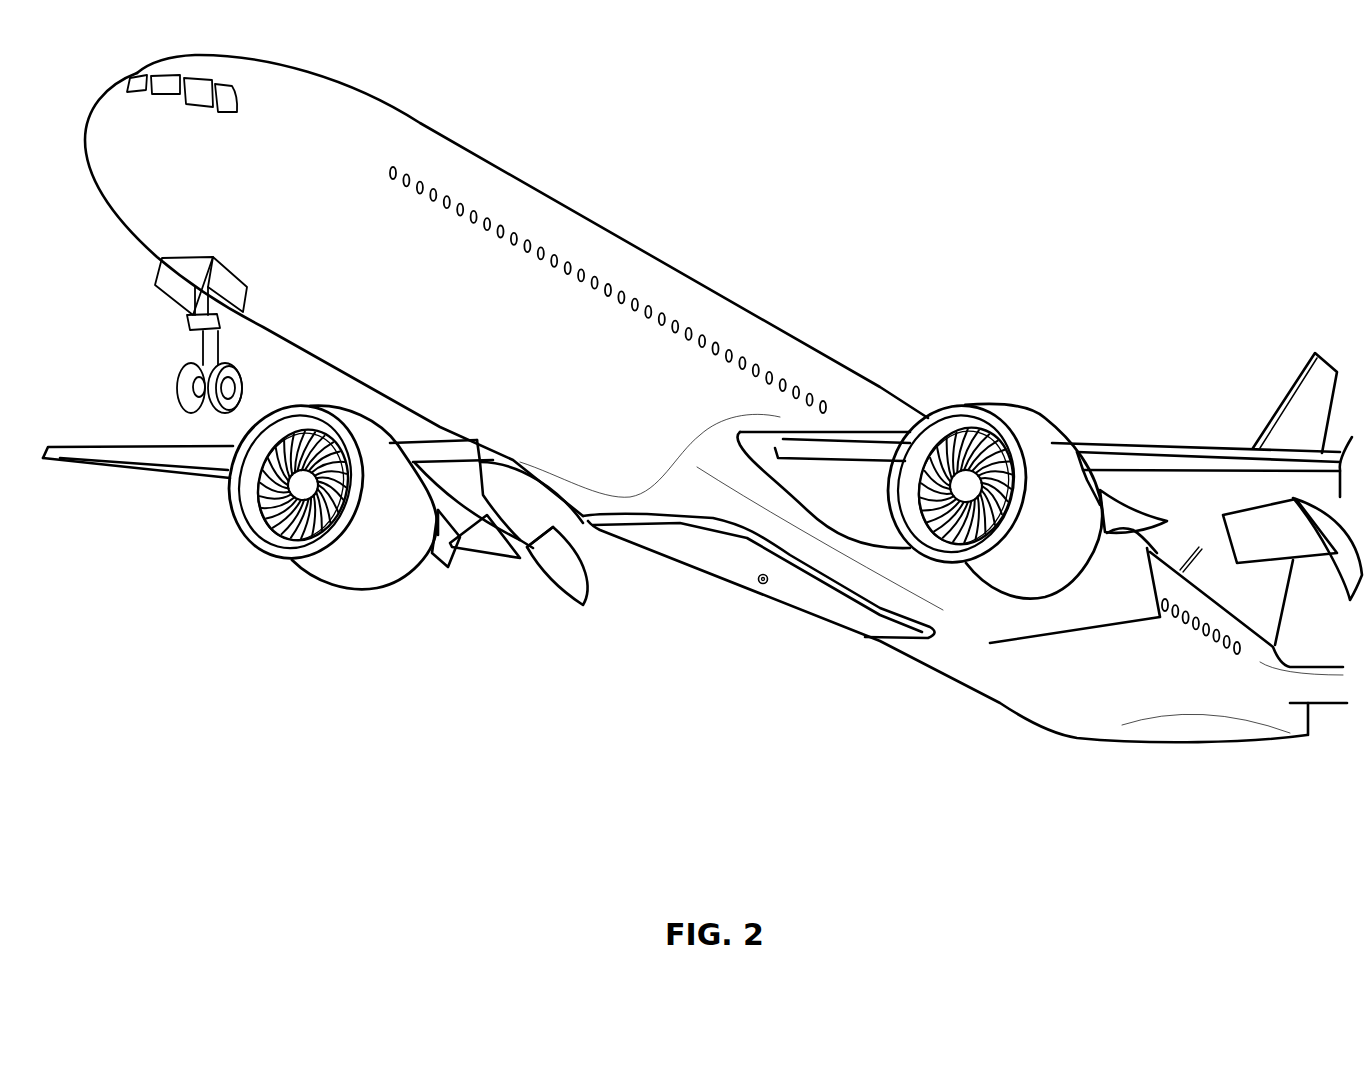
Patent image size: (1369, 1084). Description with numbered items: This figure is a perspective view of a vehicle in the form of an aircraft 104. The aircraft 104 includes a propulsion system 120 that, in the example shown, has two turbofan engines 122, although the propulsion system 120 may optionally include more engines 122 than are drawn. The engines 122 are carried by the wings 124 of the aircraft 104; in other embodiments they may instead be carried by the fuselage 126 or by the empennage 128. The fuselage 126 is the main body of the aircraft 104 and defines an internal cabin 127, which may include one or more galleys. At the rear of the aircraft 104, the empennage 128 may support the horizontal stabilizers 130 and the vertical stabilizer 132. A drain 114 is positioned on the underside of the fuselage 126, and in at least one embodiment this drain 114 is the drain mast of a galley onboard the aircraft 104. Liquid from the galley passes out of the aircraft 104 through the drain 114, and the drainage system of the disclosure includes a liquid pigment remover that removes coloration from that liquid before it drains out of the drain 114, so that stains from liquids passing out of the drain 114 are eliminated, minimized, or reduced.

The aircraft 104 is at (729, 189).
The drain 114 is at (764, 584).
The propulsion system 120 is at (285, 603).
The turbofan engines 122 is at (240, 535).
The wings 124 is at (160, 468).
The fuselage 126 is at (800, 338).
The internal cabin 127 is at (827, 403).
The empennage 128 is at (1256, 398).
The horizontal stabilizers 130 is at (1348, 672).
The vertical stabilizer 132 is at (1313, 383).